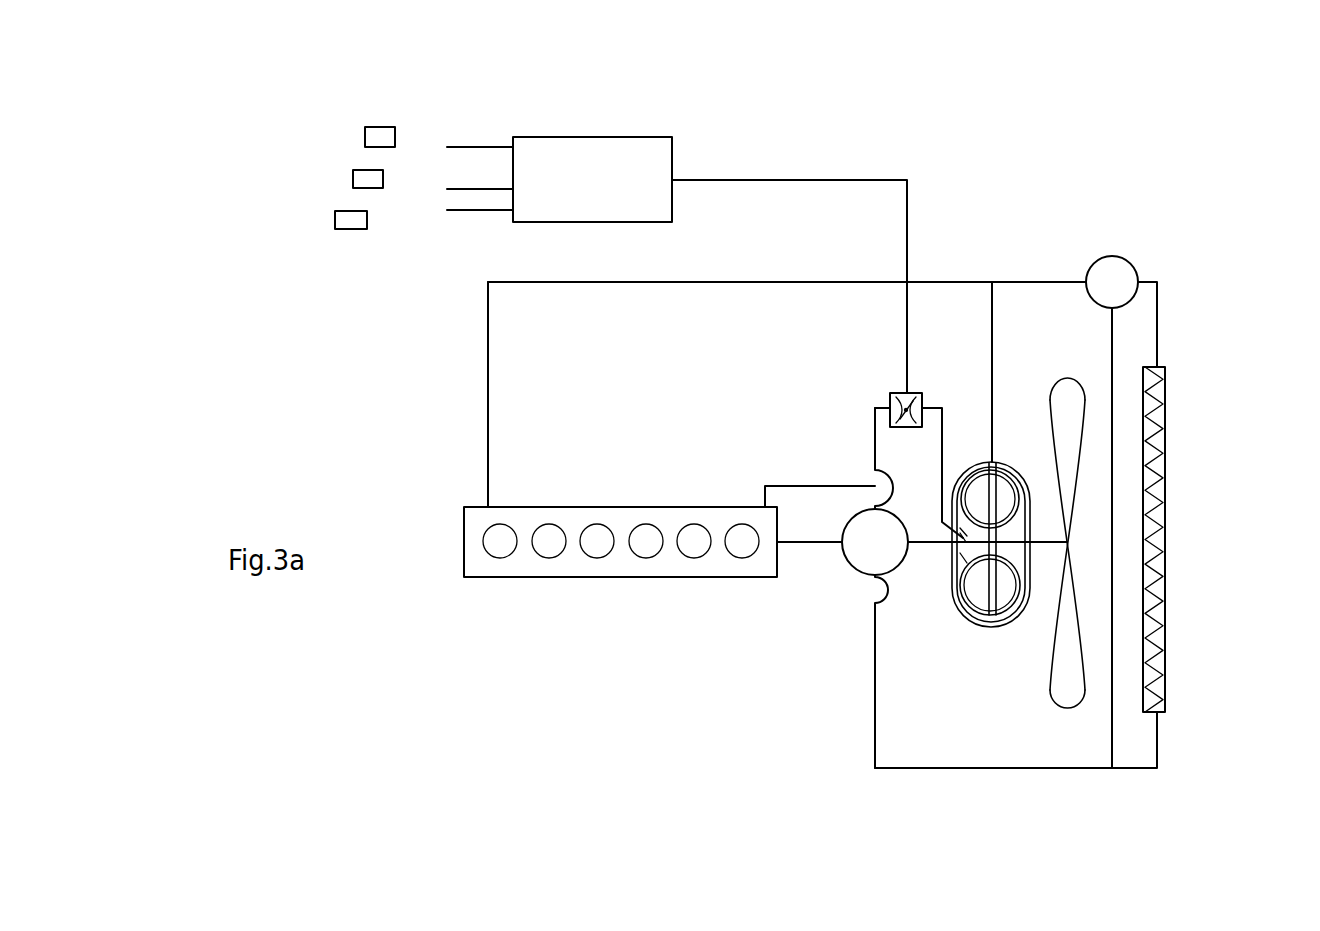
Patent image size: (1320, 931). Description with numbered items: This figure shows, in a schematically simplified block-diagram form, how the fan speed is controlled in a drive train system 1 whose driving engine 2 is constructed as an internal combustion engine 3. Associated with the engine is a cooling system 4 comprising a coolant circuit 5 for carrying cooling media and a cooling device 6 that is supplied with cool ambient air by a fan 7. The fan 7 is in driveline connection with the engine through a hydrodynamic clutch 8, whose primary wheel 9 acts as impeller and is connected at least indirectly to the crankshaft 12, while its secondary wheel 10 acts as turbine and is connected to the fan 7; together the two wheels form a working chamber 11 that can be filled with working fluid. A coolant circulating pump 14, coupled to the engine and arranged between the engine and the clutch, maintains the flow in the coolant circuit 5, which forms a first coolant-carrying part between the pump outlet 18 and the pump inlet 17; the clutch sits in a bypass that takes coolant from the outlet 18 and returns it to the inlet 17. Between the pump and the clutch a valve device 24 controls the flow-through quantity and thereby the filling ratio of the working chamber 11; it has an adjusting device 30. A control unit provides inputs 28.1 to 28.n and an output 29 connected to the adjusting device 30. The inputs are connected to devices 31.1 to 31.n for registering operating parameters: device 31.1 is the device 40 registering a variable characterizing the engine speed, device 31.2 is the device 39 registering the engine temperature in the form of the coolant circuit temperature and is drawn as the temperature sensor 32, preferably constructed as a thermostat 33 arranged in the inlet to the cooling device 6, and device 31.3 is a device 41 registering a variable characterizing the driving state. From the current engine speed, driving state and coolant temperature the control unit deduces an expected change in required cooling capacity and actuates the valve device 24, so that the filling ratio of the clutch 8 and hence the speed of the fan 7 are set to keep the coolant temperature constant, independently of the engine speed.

The drive train system 1 is at (877, 170).
The driving engine 2 is at (620, 582).
The internal combustion engine 3 is at (673, 560).
The cooling system 4 is at (1023, 253).
The coolant circuit 5 is at (955, 282).
The cooling device 6 is at (1165, 622).
The fan 7 is at (1053, 707).
The hydrodynamic clutch 8 is at (957, 613).
The primary wheel 9 is at (968, 588).
The secondary wheel 10 is at (1007, 602).
The working chamber 11 is at (987, 595).
The crankshaft 12 is at (805, 543).
The coolant circulating pump 14 is at (847, 567).
The inlet 17 is at (870, 600).
The outlet 18 is at (875, 470).
The valve device 24 is at (895, 390).
The input 28.1 is at (480, 147).
The input 28.n is at (467, 210).
The output 29 is at (671, 177).
The adjusting device 30 is at (907, 392).
The device for registering operating parameters 31.1 is at (375, 127).
The device for registering operating parameters 31.2 is at (1193, 495).
The device for registering operating parameters 31.3 is at (353, 177).
The device for registering operating parameters 31.n is at (335, 220).
The temperature sensor 32 is at (1138, 263).
The thermostat 33 is at (1157, 318).
The device for registering temperature 39 is at (1193, 495).
The device for registering engine operating state 40 is at (360, 88).
The device for registering driving state 41 is at (296, 186).